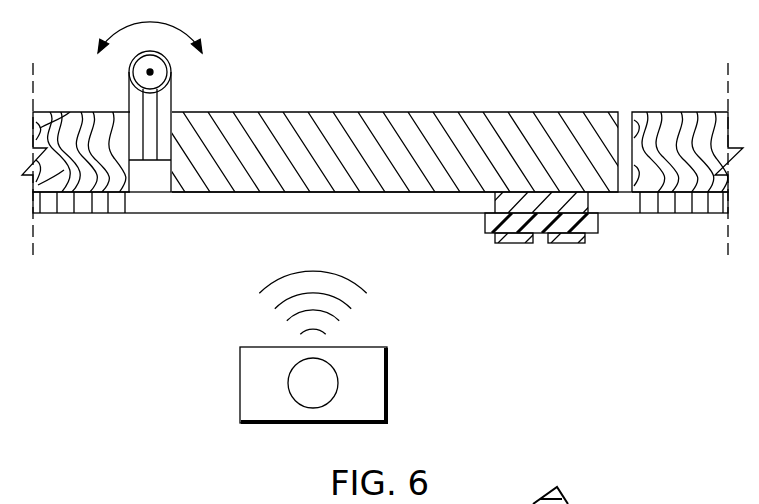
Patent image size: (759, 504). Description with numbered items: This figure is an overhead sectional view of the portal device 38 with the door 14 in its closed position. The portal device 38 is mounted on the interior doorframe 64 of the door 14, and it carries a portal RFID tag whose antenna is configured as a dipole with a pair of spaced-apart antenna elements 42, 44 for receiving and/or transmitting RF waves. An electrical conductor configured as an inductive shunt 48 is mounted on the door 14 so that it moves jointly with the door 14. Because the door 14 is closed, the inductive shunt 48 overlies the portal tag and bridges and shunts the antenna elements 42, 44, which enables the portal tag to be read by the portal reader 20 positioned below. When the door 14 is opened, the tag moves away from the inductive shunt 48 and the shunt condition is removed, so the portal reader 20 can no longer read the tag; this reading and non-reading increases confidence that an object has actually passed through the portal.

The door 14 is at (397, 122).
The portal reader 20 is at (240, 385).
The portal device 38 is at (571, 253).
The antenna element 42 is at (513, 245).
The antenna element 44 is at (568, 245).
The inductive shunt 48 is at (540, 190).
The doorframe 64 is at (212, 203).